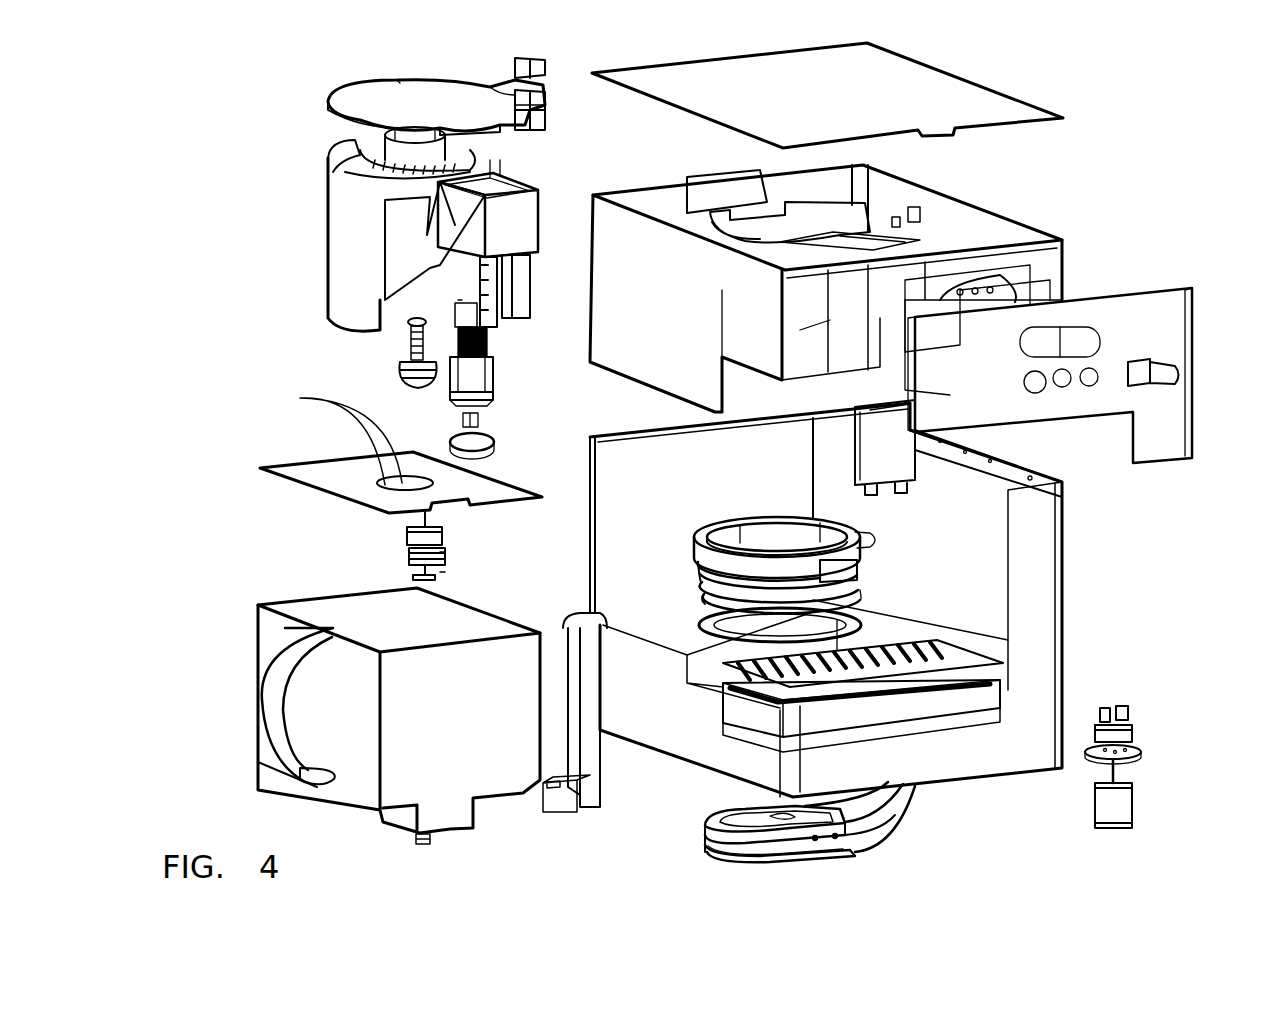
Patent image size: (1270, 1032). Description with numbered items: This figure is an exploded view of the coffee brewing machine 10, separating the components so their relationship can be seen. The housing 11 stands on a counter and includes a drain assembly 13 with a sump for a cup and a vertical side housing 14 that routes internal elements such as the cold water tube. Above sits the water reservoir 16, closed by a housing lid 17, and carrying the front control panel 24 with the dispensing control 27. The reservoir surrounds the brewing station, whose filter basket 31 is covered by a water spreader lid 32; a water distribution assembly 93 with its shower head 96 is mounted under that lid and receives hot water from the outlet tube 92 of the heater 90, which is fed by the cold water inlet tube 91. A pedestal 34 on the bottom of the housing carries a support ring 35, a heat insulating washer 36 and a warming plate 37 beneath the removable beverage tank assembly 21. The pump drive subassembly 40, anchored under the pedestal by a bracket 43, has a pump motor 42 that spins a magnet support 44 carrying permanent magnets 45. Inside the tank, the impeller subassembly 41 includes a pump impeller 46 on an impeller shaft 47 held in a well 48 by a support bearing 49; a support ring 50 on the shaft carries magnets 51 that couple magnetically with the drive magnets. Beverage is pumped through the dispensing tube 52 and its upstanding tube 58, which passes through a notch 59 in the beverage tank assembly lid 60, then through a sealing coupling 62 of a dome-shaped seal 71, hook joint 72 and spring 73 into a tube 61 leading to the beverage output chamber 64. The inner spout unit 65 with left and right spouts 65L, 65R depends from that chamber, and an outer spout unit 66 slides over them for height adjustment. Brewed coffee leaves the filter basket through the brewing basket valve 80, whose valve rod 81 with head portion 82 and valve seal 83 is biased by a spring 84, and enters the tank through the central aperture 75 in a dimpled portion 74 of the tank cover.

The coffee brewing machine 10 is at (1100, 130).
The housing 11 is at (1040, 540).
The drain assembly 13 is at (907, 708).
The vertical side housing 14 is at (975, 650).
The water reservoir 16 is at (1010, 235).
The housing lid 17 is at (812, 103).
The beverage tank assembly 21 is at (268, 714).
The front control panel 24 is at (1170, 310).
The dispensing control 27 is at (1178, 378).
The filter basket 31 is at (338, 185).
The water spreader lid 32 is at (375, 90).
The pedestal 34 is at (645, 627).
The support ring 35 is at (860, 540).
The heat insulating washer 36 is at (853, 595).
The warming plate 37 is at (1000, 630).
The pump drive subassembly 40 is at (1140, 783).
The impeller subassembly 41 is at (262, 538).
The pump motor 42 is at (1132, 803).
The bracket 43 is at (1088, 752).
The magnet support 44 is at (1135, 732).
The permanent magnets 45 is at (1125, 712).
The pump impeller 46 is at (410, 538).
The impeller shaft 47 is at (440, 573).
The well 48 is at (433, 843).
The support bearing 49 is at (410, 570).
The support ring 50 is at (408, 548).
The magnets 51 is at (445, 552).
The dispensing tube 52 is at (580, 797).
The upstanding tube 58 is at (592, 745).
The notch 59 is at (463, 498).
The beverage tank assembly lid 60 is at (290, 465).
The tube 61 is at (455, 300).
The sealing coupling 62 is at (497, 350).
The beverage output chamber 64 is at (495, 188).
The inner spout unit 65 is at (1000, 478).
The left spout 65L is at (470, 285).
The right spout 65R is at (520, 310).
The outer spout unit 66 is at (965, 428).
The dome-shaped seal 71 is at (494, 437).
The hook joint 72 is at (490, 385).
The spring 73 is at (490, 340).
The dimpled portion 74 is at (400, 480).
The central aperture 75 is at (336, 438).
The brewing basket valve 80 is at (410, 360).
The valve rod 81 is at (417, 387).
The head portion 82 is at (405, 380).
The valve seal 83 is at (410, 320).
The spring 84 is at (410, 340).
The heater 90 is at (703, 833).
The cold water inlet tube 91 is at (853, 807).
The outlet tube 92 is at (787, 855).
The water distribution assembly 93 is at (545, 120).
The shower head 96 is at (388, 145).